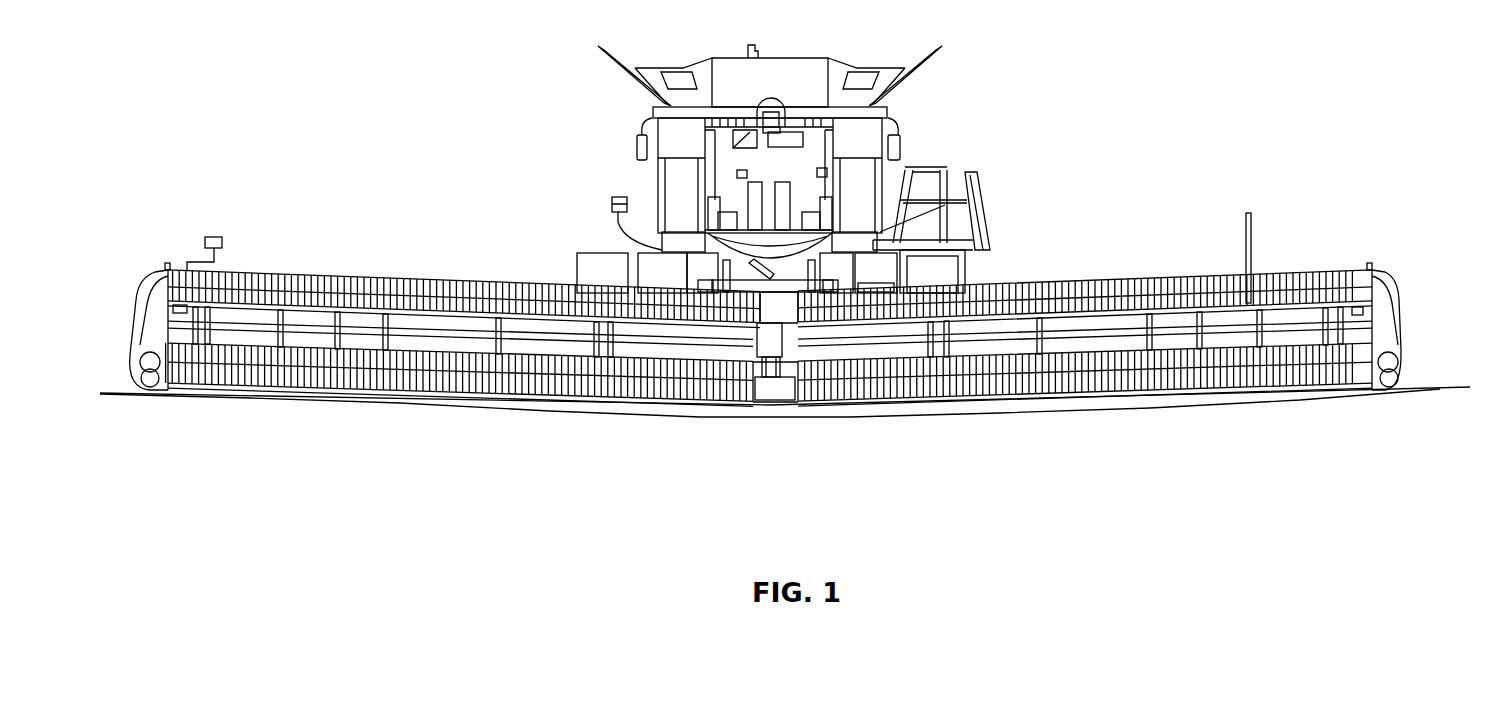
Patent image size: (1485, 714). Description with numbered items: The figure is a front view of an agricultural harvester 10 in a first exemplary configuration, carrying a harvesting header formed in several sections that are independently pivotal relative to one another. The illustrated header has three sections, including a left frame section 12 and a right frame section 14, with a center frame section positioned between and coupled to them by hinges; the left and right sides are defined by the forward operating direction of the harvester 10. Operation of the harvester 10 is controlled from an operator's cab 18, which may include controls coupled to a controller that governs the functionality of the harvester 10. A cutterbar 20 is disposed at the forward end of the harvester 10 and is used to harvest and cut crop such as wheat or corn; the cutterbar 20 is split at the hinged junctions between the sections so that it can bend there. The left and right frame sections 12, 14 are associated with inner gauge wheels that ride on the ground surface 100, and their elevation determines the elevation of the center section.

The agricultural harvester 10 is at (997, 82).
The left frame section 12 is at (1290, 242).
The right frame section 14 is at (445, 281).
The operator's cab 18 is at (900, 128).
The cutterbar 20 is at (1194, 401).
The ground surface 100 is at (1460, 384).